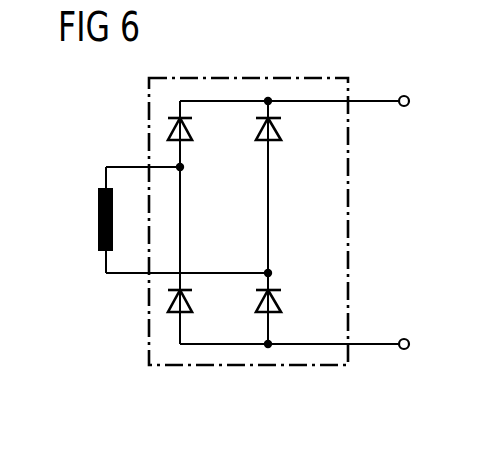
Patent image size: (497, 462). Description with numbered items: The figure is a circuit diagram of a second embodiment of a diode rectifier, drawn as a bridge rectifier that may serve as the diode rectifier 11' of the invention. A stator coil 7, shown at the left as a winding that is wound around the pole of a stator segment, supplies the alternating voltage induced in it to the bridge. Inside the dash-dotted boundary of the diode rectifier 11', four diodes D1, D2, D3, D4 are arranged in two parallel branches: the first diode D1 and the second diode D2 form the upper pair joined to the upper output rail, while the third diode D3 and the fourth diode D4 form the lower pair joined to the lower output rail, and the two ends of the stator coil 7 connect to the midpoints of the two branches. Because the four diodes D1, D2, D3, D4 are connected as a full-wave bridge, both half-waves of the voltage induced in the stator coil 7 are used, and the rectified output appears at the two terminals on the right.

The stator coil 7 is at (98, 212).
The diode rectifier 11' is at (286, 221).
The diode D1 is at (192, 128).
The diode D2 is at (281, 128).
The diode D3 is at (192, 300).
The diode D4 is at (281, 300).